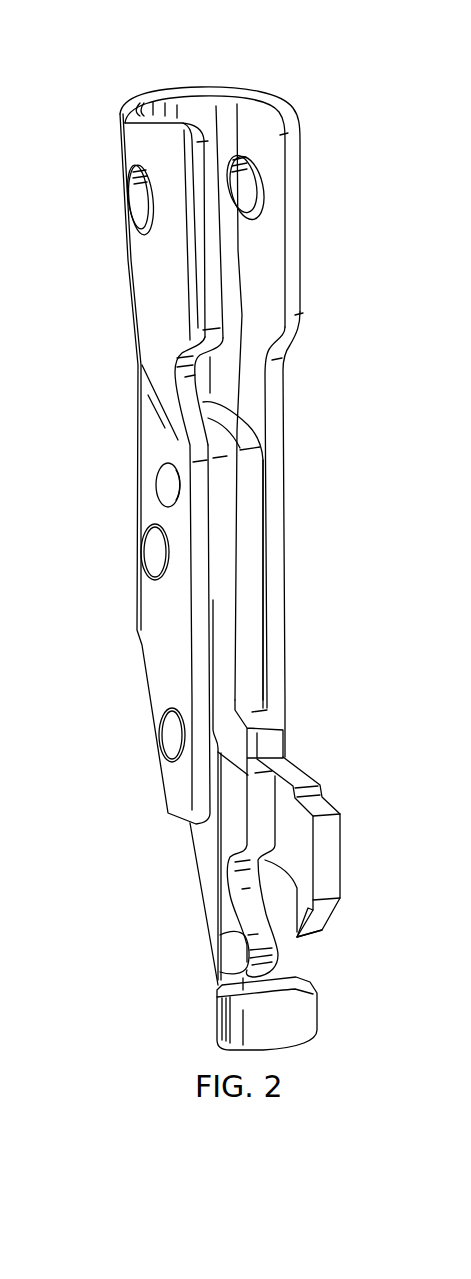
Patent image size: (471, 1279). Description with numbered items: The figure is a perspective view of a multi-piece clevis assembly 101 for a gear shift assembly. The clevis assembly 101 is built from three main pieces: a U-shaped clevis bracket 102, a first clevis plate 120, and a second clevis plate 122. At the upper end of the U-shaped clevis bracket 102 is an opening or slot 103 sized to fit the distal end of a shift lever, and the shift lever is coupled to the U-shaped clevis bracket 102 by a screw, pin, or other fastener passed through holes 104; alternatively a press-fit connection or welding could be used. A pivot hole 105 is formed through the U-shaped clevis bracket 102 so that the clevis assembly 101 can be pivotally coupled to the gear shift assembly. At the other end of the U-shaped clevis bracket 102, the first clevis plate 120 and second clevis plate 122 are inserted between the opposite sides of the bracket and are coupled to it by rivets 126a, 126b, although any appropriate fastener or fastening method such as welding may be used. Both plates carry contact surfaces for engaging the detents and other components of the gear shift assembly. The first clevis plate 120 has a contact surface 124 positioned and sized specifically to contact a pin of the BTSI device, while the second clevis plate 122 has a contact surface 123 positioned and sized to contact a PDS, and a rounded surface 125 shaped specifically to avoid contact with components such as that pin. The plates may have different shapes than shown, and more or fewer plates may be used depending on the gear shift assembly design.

The clevis assembly 101 is at (300, 91).
The U-shaped clevis bracket 102 is at (118, 134).
The opening or slot 103 is at (216, 90).
The holes 104 is at (265, 177).
The pivot hole 105 is at (158, 482).
The first clevis plate 120 is at (302, 762).
The second clevis plate 122 is at (198, 850).
The contact surface 123 is at (320, 1017).
The contact surface 124 is at (303, 932).
The rounded surface 125 is at (230, 940).
The rivet 126a is at (146, 553).
The rivet 126b is at (157, 736).